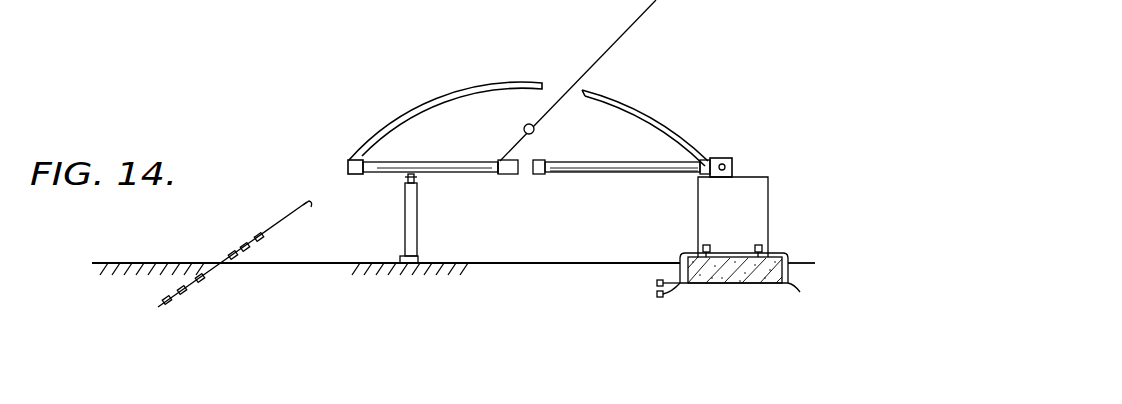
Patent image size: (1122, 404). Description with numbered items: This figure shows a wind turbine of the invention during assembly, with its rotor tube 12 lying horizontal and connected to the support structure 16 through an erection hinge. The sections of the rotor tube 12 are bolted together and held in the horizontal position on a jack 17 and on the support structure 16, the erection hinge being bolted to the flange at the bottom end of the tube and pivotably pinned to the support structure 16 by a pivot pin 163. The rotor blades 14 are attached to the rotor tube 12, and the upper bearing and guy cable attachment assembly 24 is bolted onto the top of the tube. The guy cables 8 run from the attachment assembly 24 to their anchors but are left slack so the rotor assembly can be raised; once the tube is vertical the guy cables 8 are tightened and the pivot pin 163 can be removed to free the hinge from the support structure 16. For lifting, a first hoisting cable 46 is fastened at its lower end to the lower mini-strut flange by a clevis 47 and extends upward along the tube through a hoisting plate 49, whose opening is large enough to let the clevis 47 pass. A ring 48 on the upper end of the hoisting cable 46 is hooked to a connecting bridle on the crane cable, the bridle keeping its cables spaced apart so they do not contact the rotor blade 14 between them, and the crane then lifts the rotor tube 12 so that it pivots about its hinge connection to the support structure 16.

The guy cable 8 is at (287, 218).
The rotor tube 12 is at (632, 175).
The rotor blade 14 is at (472, 83).
The support structure 16 is at (776, 164).
The jack 17 is at (417, 217).
The upper bearing and guy cable attachment assembly 24 is at (348, 164).
The first hoisting cable 46 is at (653, 162).
The clevis 47 is at (692, 174).
The ring 48 is at (535, 131).
The hoisting plate 49 is at (498, 165).
The pivot pin 163 is at (721, 158).